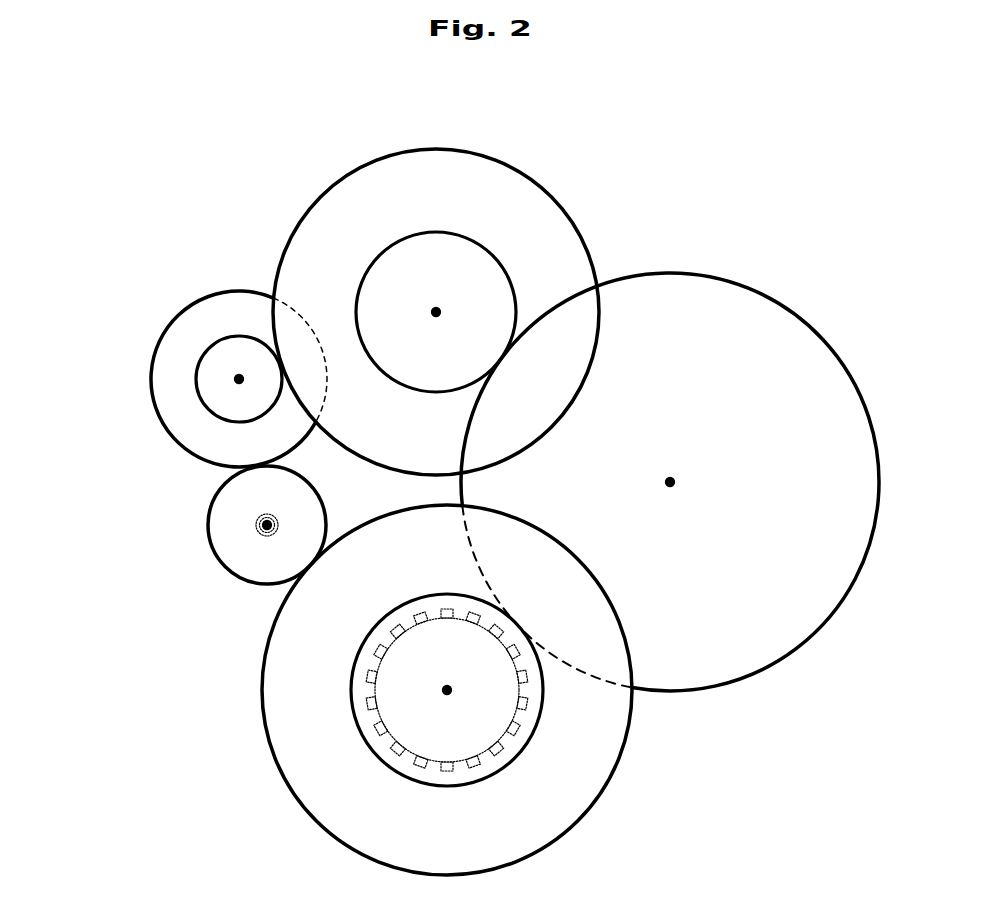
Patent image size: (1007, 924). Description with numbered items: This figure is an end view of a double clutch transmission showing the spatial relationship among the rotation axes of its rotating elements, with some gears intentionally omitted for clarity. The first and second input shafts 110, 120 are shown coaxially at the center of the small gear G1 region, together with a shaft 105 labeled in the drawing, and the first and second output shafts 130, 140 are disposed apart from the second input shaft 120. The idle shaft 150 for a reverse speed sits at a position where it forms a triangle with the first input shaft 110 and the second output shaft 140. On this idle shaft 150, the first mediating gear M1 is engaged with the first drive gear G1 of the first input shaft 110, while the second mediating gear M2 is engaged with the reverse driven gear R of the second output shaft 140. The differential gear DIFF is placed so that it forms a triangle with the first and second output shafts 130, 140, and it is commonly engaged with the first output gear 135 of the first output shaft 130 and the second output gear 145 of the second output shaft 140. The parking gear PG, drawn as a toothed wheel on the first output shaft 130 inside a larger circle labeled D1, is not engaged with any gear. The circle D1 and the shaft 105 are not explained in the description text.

The reverse driven gear R is at (442, 150).
The second output shaft 140 is at (436, 309).
The second output gear 145 is at (491, 250).
The differential gear DIFF is at (677, 272).
The second mediating gear M2 is at (216, 343).
The first mediating gear M1 is at (150, 378).
The idle shaft 150 is at (236, 380).
The first drive gear G1 is at (210, 550).
The input shaft 105 is at (154, 524).
The first input shaft 110 is at (154, 524).
The second input shaft 120 is at (262, 525).
The first driven gear D1 is at (261, 690).
The first output gear 135 is at (358, 651).
The parking gear PG is at (513, 745).
The first output shaft 130 is at (443, 690).